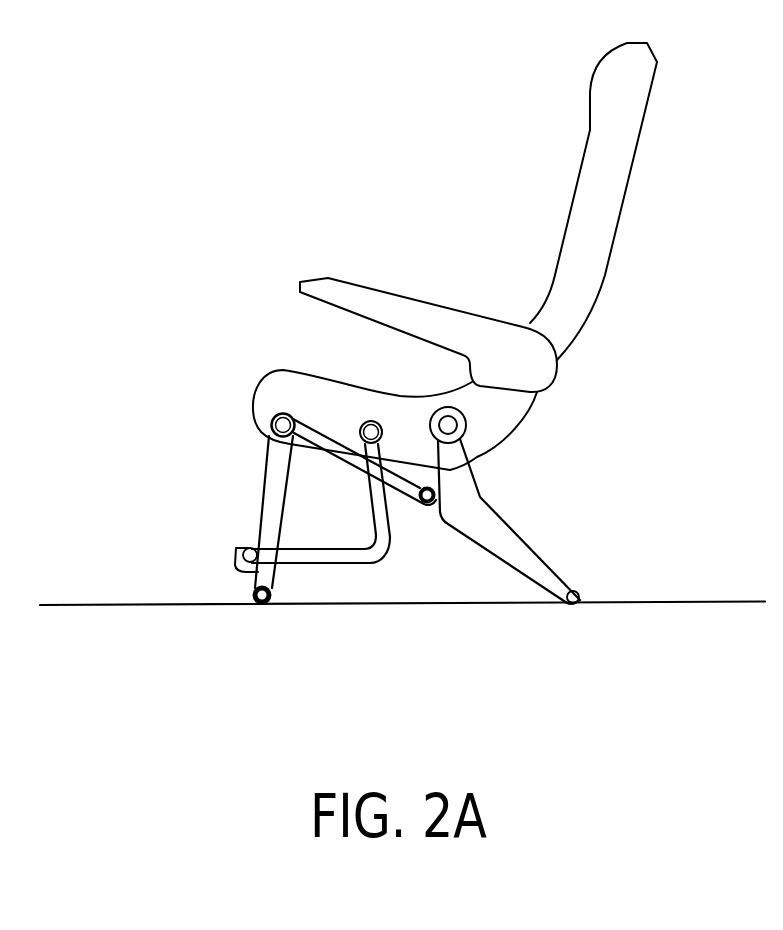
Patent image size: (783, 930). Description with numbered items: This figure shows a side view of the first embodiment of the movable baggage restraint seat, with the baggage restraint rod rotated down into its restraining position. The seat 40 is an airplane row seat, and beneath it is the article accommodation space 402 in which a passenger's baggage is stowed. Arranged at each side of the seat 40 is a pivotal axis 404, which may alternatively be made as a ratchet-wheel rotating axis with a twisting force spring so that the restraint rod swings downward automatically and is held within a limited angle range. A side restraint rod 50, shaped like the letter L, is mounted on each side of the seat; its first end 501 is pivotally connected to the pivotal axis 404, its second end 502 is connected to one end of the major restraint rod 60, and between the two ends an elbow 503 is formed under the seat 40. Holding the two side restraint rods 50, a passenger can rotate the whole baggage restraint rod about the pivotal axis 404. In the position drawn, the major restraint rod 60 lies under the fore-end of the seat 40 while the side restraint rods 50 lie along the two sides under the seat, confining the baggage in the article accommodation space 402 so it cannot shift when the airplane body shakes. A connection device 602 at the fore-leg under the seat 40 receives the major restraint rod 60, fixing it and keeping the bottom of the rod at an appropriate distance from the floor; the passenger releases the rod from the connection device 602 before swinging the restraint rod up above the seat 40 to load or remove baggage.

The seat 40 is at (597, 223).
The article accommodation space 402 is at (478, 588).
The pivotal axis 404 is at (372, 428).
The side restraint rod 50 is at (422, 566).
The first end 501 is at (384, 463).
The second end 502 is at (268, 557).
The elbow 503 is at (383, 548).
The major restraint rod 60 is at (245, 550).
The connection device 602 is at (262, 577).